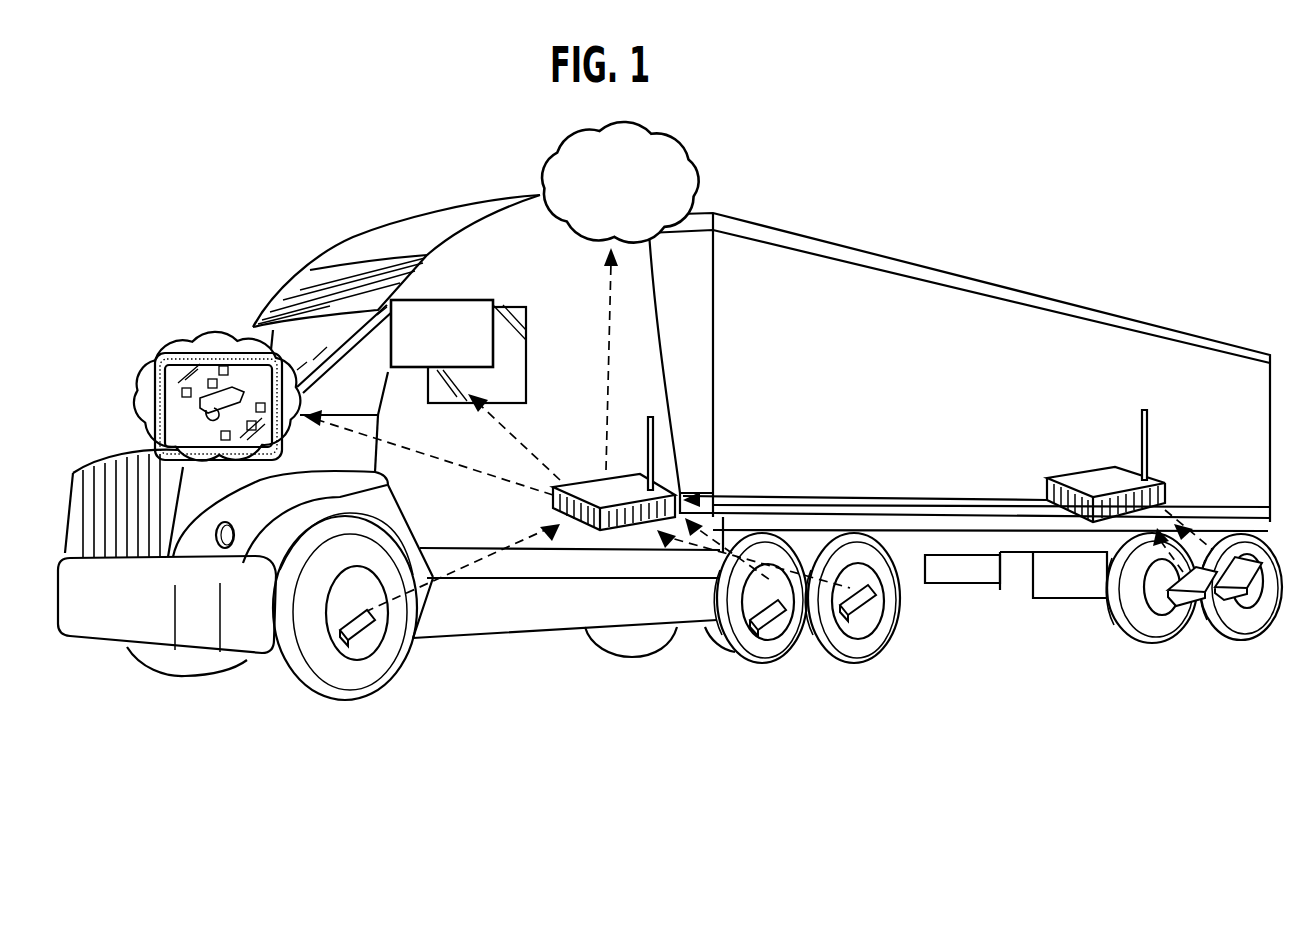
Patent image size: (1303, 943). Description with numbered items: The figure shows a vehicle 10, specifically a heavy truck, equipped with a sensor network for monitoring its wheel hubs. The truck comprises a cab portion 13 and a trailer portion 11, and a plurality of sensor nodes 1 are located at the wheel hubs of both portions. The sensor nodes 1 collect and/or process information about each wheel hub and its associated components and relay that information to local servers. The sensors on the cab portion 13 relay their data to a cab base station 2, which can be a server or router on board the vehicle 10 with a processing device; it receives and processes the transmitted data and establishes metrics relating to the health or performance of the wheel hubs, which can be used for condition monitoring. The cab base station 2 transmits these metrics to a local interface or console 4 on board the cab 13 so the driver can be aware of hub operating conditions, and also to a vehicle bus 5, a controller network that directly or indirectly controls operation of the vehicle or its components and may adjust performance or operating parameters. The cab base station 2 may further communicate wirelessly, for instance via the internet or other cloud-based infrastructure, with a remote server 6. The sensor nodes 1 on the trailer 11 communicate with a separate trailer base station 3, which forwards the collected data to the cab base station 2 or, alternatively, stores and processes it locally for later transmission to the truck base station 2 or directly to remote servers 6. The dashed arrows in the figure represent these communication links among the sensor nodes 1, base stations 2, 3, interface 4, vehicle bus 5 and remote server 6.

The sensor node 1 is at (801, 608).
The cab base station 2 is at (577, 430).
The trailer base station 3 is at (1130, 491).
The interface 4 is at (217, 396).
The vehicle bus 5 is at (437, 336).
The remote server 6 is at (622, 182).
The vehicle 10 is at (830, 160).
The trailer portion 11 is at (1113, 311).
The cab portion 13 is at (357, 240).